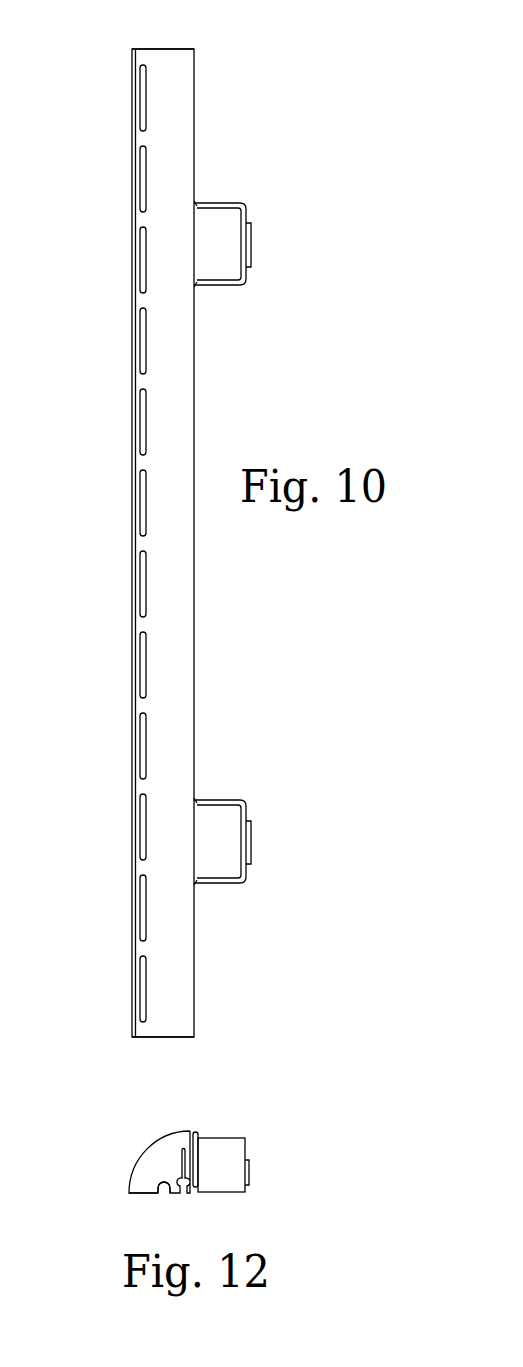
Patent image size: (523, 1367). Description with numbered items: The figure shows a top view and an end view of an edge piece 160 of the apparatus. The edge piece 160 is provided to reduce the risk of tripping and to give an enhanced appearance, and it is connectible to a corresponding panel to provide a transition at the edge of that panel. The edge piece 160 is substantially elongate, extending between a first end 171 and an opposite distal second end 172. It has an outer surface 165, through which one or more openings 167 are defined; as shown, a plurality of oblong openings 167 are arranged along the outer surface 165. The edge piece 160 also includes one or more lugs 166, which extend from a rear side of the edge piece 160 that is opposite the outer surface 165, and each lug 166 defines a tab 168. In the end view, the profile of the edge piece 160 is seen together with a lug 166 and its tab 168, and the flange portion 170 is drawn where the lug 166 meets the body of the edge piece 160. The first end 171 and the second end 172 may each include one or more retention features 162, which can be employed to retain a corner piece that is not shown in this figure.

In FIG. 10, the edge piece 160 is at (70, 151).
In FIG. 12, the edge piece 160 is at (243, 1089).
In FIG. 12, the retention feature 162 is at (169, 1192).
In FIG. 10, the outer surface 165 is at (190, 626).
In FIG. 12, the outer surface 165 is at (152, 1143).
In FIG. 10, the lug 166 is at (250, 195).
In FIG. 12, the lug 166 is at (248, 1134).
In FIG. 10, the opening 167 is at (143, 745).
In FIG. 10, the tab 168 is at (253, 244).
In FIG. 12, the tab 168 is at (249, 1173).
In FIG. 10, the flange 170 is at (196, 203).
In FIG. 12, the flange 170 is at (195, 1136).
In FIG. 10, the first end 171 is at (163, 1037).
In FIG. 12, the first end 171 is at (138, 1175).
In FIG. 10, the second end 172 is at (166, 49).